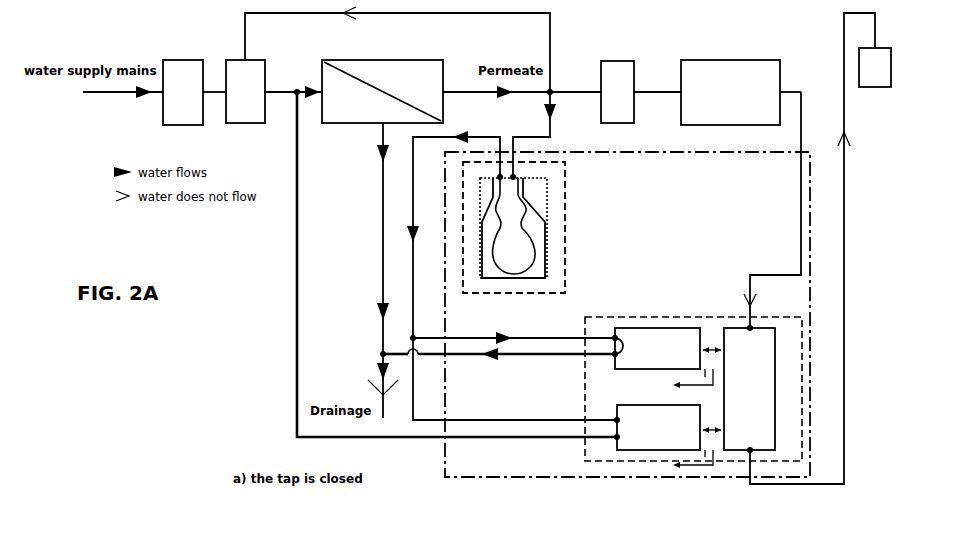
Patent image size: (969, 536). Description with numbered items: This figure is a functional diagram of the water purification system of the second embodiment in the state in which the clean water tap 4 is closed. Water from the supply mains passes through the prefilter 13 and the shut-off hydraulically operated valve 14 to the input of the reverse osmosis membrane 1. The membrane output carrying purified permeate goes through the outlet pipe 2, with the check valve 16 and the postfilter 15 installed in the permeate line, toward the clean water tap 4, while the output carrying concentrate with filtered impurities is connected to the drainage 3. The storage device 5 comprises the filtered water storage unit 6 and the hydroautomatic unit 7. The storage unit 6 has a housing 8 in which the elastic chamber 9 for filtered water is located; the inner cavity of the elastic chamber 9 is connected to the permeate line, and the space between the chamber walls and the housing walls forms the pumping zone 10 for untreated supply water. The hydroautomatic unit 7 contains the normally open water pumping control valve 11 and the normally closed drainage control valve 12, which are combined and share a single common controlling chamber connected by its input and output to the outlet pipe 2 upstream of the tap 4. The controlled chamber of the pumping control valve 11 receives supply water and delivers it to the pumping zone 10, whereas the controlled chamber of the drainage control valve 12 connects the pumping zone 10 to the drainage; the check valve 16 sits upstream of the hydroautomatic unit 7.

The reverse osmosis membrane 1 is at (382, 91).
The outlet pipe 2 is at (471, 88).
The drainage 3 is at (380, 178).
The clean water tap 4 is at (875, 67).
The storage device 5 is at (627, 314).
The filtered water storage unit 6 is at (514, 227).
The hydroautomatic unit 7 is at (693, 389).
The housing 8 is at (543, 206).
The elastic chamber 9 is at (533, 228).
The pumping zone 10 is at (537, 266).
The water pumping control valve 11 is at (660, 452).
The drainage control valve 12 is at (648, 327).
The prefilter 13 is at (183, 92).
The shut-off hydraulically operated valve 14 is at (245, 91).
The postfilter 15 is at (741, 92).
The check valve 16 is at (641, 92).